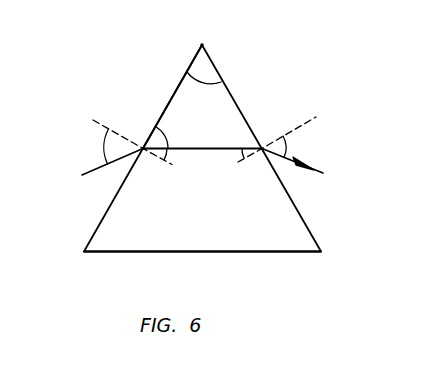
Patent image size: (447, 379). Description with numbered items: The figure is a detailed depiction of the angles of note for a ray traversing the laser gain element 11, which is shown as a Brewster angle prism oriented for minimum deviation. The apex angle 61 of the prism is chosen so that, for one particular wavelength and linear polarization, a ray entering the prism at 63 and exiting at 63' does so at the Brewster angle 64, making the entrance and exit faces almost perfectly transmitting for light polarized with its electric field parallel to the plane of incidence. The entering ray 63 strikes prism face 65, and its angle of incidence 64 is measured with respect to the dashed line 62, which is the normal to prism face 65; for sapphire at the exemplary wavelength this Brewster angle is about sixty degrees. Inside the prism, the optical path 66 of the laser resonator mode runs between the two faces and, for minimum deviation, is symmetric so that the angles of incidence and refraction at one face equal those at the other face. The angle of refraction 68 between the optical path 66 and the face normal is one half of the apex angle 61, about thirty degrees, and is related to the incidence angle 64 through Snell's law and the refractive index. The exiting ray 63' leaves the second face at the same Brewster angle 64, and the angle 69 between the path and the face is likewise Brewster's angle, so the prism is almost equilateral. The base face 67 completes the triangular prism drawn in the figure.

The laser gain element 11 is at (274, 253).
The apex angle 61 is at (226, 87).
The normal to prism face 62 is at (95, 118).
The entering ray 63 is at (104, 183).
The exiting ray 63' is at (314, 153).
The Brewster angle 64 is at (193, 146).
The prism face 65 is at (182, 78).
The optical path 66 is at (217, 150).
The base face 67 is at (112, 254).
The angle of refraction 68 is at (172, 158).
The angle 69 is at (168, 138).